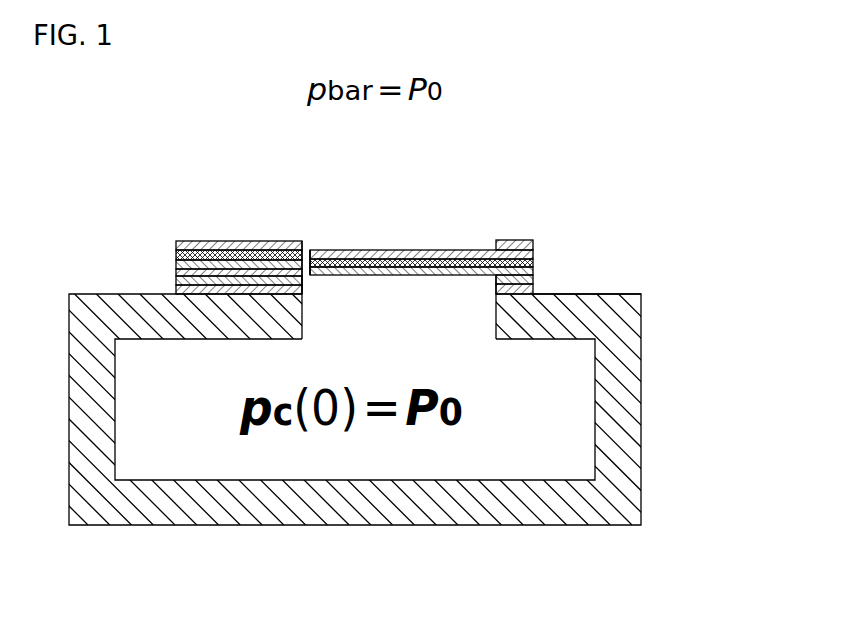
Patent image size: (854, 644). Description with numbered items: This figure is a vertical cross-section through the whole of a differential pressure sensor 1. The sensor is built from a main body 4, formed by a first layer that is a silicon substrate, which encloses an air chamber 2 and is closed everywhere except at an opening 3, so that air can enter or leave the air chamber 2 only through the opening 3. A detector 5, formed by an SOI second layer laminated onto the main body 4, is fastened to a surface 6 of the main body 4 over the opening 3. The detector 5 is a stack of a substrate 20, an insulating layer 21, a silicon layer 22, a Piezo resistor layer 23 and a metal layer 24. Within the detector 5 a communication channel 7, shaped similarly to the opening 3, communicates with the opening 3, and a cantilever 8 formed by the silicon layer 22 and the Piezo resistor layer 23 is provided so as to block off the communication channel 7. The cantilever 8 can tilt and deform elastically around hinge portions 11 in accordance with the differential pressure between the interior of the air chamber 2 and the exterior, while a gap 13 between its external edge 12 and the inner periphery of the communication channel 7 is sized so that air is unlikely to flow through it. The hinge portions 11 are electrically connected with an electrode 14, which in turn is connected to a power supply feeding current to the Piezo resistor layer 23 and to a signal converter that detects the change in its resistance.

The differential pressure sensor 1 is at (657, 183).
The air chamber 2 is at (553, 403).
The opening 3 is at (490, 312).
The main body 4 is at (623, 481).
The detector 5 is at (518, 225).
The surface 6 is at (600, 294).
The communication channel 7 is at (303, 262).
The cantilever 8 is at (363, 245).
The hinge portions 11 is at (476, 250).
The external edge 12 is at (308, 278).
The gap 13 is at (309, 250).
The electrode 14 is at (535, 243).
The substrate 20 is at (176, 289).
The insulating layer 21 is at (176, 270).
The silicon layer 22 is at (176, 262).
The Piezo resistor layer 23 is at (176, 252).
The metal layer 24 is at (176, 243).